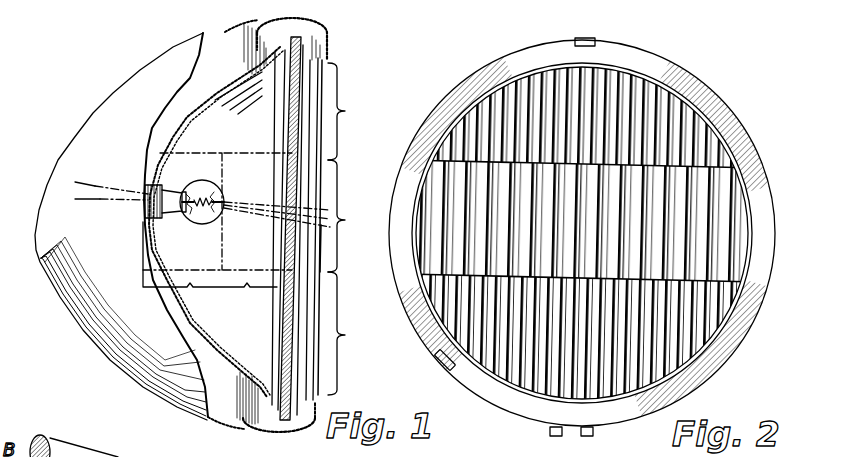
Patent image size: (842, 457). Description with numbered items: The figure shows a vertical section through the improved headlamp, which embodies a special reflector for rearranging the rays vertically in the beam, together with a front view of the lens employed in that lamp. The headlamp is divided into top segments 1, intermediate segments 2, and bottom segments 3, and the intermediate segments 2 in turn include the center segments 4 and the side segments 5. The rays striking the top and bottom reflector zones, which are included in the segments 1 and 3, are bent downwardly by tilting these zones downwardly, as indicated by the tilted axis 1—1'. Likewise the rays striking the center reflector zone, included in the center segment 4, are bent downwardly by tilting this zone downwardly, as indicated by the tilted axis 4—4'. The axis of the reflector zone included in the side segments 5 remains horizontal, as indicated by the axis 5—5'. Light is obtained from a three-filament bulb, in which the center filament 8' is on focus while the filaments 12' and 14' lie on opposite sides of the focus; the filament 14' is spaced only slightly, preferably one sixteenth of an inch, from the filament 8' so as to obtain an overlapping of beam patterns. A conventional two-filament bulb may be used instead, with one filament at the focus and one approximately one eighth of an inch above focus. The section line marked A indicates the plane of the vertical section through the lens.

In FIG. 1, the top segment 1 is at (199, 220).
In FIG. 1, the intermediate segment 2 is at (342, 216).
In FIG. 1, the bottom segment 3 is at (344, 333).
In FIG. 2, the bottom segment 3 is at (419, 100).
In FIG. 1, the center segment 4 is at (146, 237).
In FIG. 1, the side segment 5 is at (131, 259).
In FIG. 1, the filament 12' is at (204, 176).
In FIG. 1, the center filament 8' is at (220, 185).
In FIG. 1, the filament 14' is at (176, 224).
In FIG. 1, the tilted axis end 4' is at (295, 185).
In FIG. 1, the horizontal axis end 5' is at (302, 198).
In FIG. 1, the tilted axis end 1' is at (342, 256).
In FIG. 2, the section line A- A is at (373, 204).